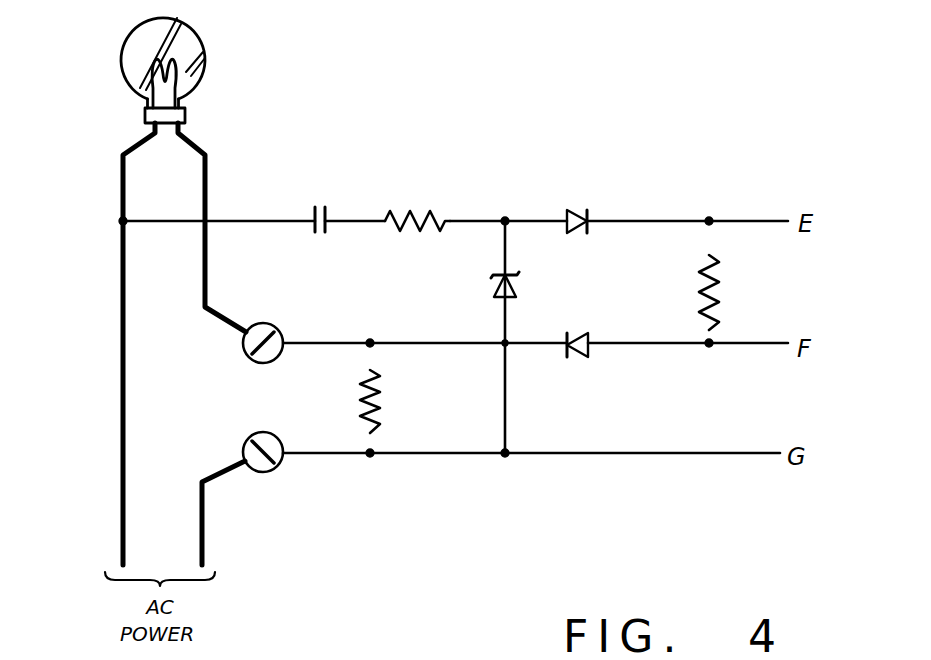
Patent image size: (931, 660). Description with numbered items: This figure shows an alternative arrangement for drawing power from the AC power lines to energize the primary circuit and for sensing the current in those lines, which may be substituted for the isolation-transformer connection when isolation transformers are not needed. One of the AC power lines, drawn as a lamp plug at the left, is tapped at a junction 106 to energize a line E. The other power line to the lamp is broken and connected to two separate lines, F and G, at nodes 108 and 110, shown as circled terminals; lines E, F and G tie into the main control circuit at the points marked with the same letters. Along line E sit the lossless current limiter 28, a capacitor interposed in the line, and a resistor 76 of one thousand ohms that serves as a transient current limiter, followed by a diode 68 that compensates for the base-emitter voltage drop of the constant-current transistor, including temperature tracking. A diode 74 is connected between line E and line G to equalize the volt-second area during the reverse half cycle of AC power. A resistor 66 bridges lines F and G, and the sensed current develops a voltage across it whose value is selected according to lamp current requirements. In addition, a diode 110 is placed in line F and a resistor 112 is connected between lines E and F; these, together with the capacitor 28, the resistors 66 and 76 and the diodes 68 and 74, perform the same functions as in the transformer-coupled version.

The lossless current limiter 28 is at (320, 206).
The resistor 66 is at (376, 400).
The diode 68 is at (574, 212).
The diode 74 is at (512, 290).
The resistor 76 is at (425, 212).
The junction 106 is at (121, 222).
The node 108 is at (277, 330).
The node 110 is at (268, 472).
The resistor 112 is at (713, 301).